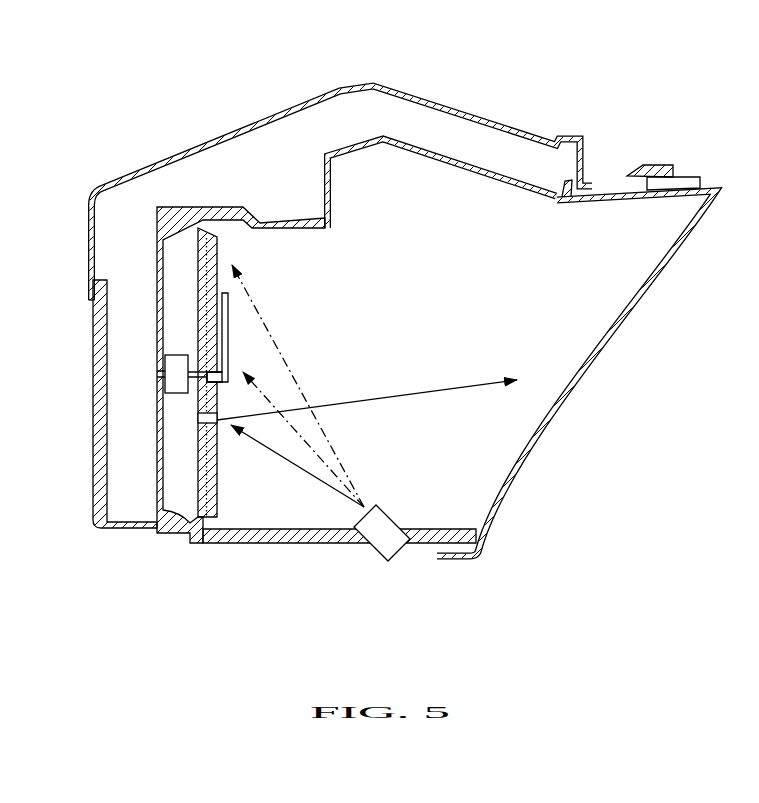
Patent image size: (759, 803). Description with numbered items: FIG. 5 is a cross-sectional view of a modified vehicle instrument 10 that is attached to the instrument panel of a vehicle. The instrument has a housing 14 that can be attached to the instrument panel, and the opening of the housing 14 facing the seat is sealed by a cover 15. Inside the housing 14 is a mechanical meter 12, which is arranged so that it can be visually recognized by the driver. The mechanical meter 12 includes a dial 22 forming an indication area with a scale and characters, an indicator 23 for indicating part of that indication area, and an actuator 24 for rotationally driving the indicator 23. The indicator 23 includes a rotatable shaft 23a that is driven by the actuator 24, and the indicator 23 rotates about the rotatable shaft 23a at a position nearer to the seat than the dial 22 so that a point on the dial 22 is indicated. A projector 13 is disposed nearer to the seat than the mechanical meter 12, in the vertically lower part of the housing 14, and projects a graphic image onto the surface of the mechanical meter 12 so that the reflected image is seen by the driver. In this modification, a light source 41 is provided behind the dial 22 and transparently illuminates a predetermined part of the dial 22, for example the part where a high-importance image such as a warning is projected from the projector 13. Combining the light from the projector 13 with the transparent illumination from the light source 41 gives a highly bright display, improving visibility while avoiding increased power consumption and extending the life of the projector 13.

The vehicle instrument 10 is at (614, 96).
The mechanical meter 12 is at (233, 254).
The projector 13 is at (384, 549).
The housing 14 is at (130, 174).
The cover 15 is at (597, 337).
The dial 22 is at (218, 500).
The indicator 23 is at (228, 331).
The rotatable shaft 23a is at (195, 380).
The actuator 24 is at (177, 361).
The light source 41 is at (203, 420).